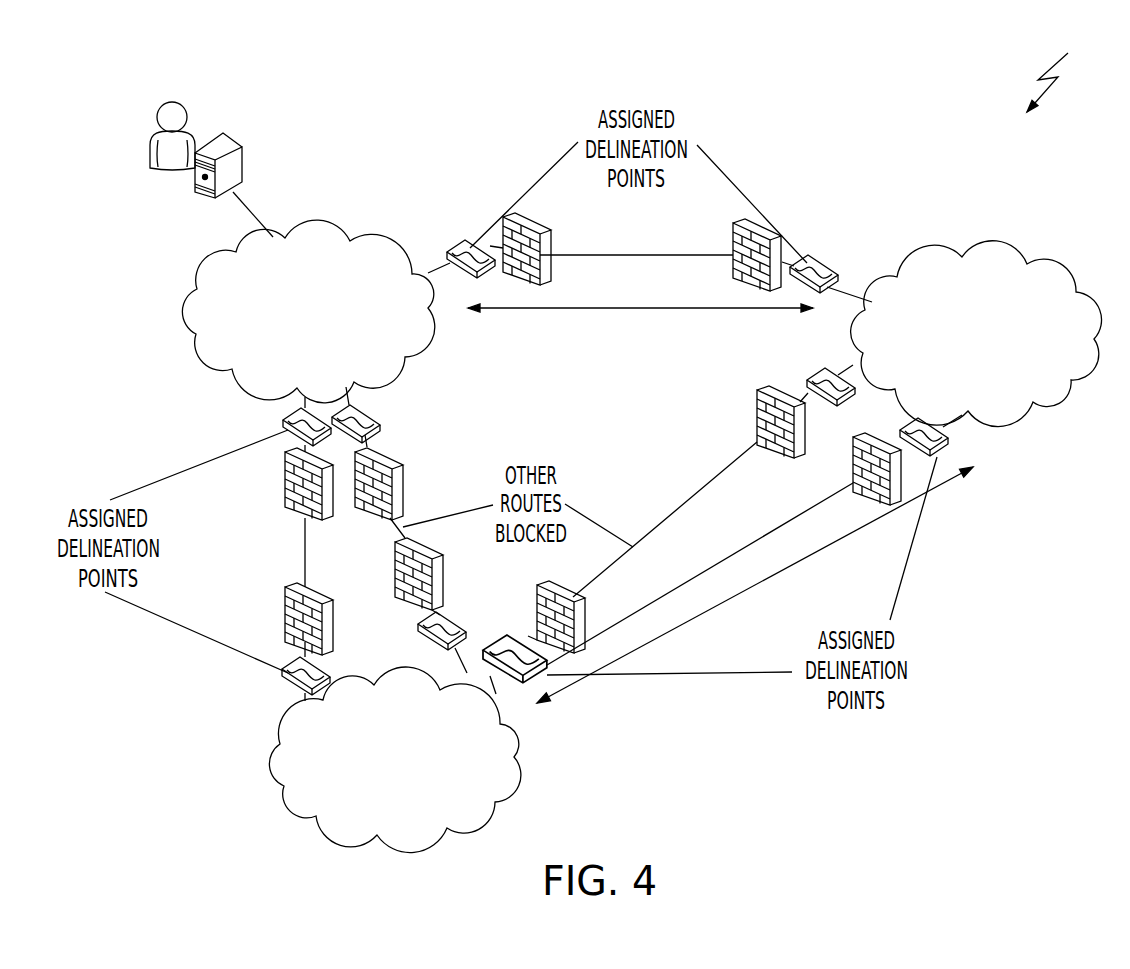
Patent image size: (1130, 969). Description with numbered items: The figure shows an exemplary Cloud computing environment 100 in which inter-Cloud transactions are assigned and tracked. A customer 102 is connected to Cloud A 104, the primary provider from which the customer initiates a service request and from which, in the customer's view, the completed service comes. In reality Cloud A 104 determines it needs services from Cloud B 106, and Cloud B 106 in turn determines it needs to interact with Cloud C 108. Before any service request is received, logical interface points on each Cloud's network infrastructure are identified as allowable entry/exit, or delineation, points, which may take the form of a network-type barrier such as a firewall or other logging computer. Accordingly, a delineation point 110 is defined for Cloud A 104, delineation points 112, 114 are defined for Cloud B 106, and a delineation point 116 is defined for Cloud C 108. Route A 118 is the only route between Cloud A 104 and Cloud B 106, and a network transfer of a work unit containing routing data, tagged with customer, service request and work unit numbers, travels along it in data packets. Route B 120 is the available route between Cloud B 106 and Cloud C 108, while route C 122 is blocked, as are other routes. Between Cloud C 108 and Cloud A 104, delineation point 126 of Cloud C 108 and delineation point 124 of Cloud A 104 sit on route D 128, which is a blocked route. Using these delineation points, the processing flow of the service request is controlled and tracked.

The Cloud computing environment 100 is at (1063, 68).
The customer 102 is at (148, 150).
The Cloud A 104 is at (181, 303).
The Cloud B 106 is at (1044, 250).
The Cloud C 108 is at (395, 847).
The delineation point 110 is at (528, 187).
The delineation point 112 is at (758, 196).
The delineation point 114 is at (908, 559).
The delineation point 116 is at (677, 676).
The route A 118 is at (578, 312).
The route B 120 is at (804, 507).
The route C 122 is at (664, 519).
The delineation point 124 is at (198, 464).
The delineation point 126 is at (193, 631).
The route D 128 is at (304, 567).